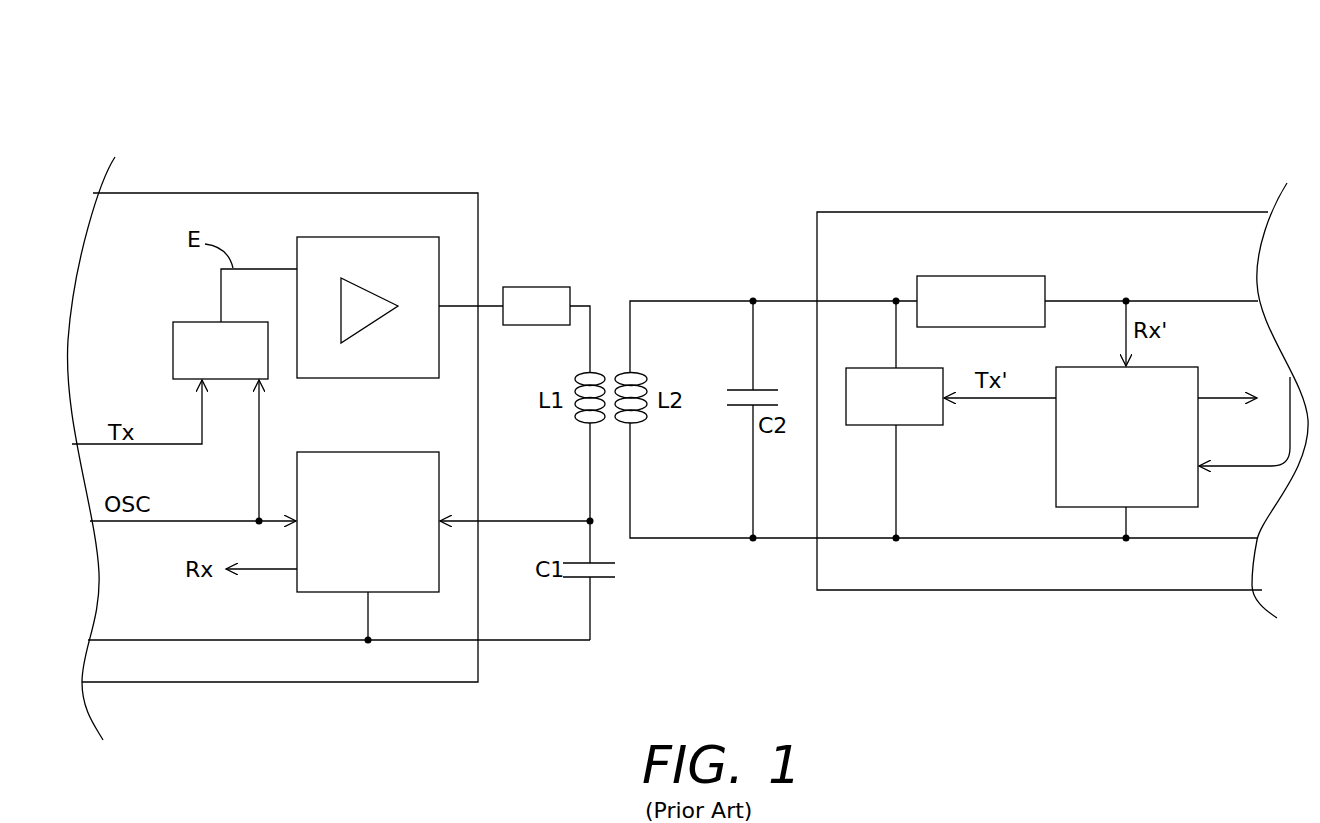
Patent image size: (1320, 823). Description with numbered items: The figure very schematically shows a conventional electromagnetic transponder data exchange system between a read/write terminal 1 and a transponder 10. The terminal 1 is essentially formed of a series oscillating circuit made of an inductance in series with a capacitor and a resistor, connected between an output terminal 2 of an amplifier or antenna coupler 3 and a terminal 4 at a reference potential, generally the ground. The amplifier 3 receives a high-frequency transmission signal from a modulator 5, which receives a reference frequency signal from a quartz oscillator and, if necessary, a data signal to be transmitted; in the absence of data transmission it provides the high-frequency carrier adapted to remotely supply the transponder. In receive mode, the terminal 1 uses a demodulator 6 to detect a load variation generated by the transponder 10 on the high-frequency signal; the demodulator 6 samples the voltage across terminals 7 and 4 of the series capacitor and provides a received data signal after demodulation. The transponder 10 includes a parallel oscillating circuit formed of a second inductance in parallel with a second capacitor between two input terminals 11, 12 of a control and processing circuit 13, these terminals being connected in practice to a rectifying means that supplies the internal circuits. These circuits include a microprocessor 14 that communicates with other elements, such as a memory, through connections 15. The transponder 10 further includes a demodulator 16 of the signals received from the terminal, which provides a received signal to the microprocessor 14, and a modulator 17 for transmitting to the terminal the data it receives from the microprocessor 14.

The read/write terminal 1 is at (345, 114).
The output terminal 2 is at (483, 306).
The amplifier or antenna coupler 3 is at (408, 378).
The terminal at a reference potential 4 is at (535, 640).
The modulator 5 is at (262, 379).
The demodulator 6 is at (410, 592).
The terminal 7 is at (588, 518).
The transponder 10 is at (1139, 115).
The input terminal 11 is at (792, 299).
The input terminal 12 is at (782, 540).
The control and processing circuit 13 is at (995, 207).
The microprocessor 14 is at (1056, 440).
The connections 15 is at (1213, 398).
The demodulator 16 is at (1020, 276).
The modulator 17 is at (882, 425).